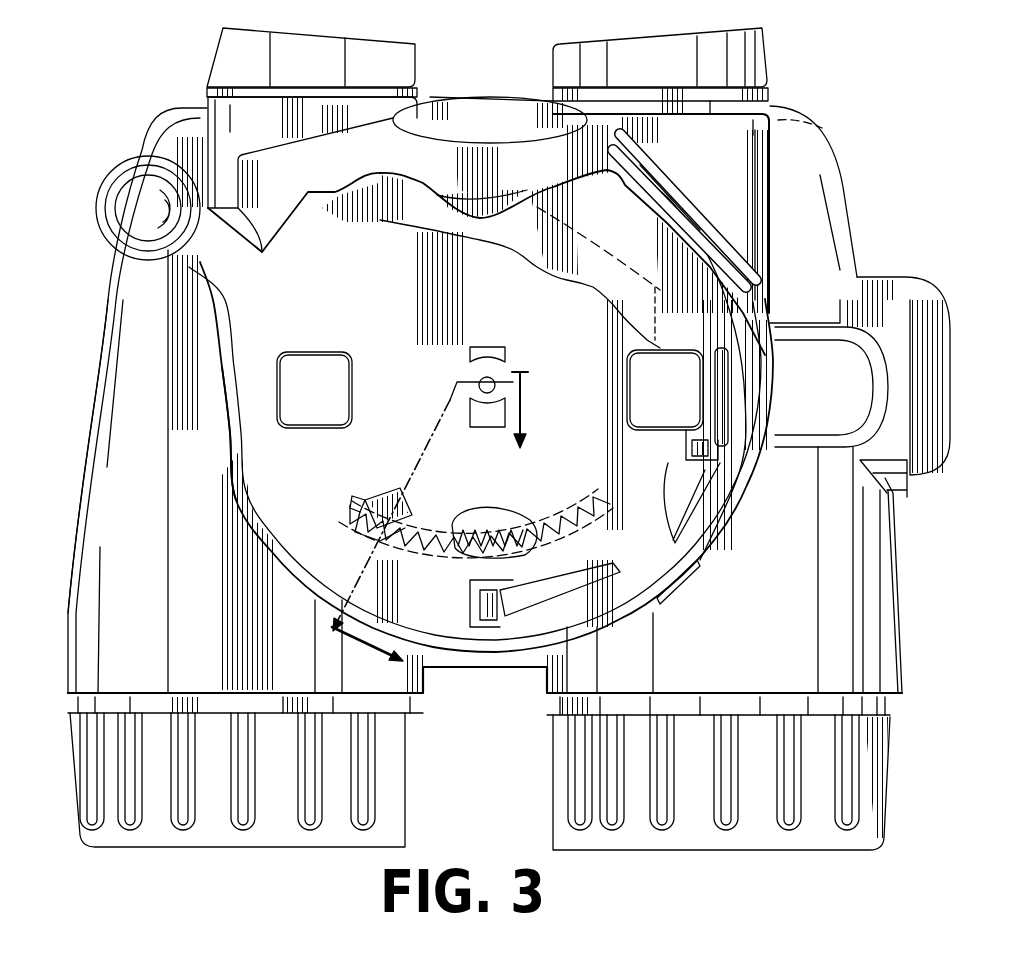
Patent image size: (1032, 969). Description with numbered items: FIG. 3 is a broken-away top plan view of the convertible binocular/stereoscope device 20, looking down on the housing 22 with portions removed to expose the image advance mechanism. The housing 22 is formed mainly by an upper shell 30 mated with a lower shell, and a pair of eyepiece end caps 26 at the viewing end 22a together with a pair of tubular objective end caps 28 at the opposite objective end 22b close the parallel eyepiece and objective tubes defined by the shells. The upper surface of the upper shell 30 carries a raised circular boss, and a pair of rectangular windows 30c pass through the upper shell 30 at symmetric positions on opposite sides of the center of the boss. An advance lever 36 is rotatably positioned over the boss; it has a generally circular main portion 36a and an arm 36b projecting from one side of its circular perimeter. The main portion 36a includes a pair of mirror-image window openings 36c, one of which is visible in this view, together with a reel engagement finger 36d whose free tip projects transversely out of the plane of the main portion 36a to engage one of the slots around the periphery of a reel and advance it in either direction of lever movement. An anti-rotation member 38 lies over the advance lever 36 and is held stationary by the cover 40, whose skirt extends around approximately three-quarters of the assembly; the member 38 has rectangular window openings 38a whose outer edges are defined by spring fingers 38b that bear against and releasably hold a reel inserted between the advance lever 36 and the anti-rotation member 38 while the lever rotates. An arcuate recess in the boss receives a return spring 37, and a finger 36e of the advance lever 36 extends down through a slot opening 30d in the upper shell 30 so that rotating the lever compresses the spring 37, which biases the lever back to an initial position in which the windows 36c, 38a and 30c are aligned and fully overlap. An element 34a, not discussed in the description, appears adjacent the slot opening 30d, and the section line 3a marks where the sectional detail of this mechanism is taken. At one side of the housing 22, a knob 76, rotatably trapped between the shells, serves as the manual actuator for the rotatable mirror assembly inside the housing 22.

The convertible binocular/stereoscope device 20 is at (970, 115).
The housing 22 is at (850, 185).
The viewing side or end 22a is at (508, 55).
The objective side or end 22b is at (506, 835).
The eyepiece end caps 26 is at (416, 68).
The tubular objective end caps 28 is at (408, 755).
The upper shell 30 is at (144, 545).
The rectangular windows 30c is at (342, 380).
The slot opening 30d is at (352, 500).
The lock member 34a is at (360, 528).
The advance lever 36 is at (349, 288).
The circular main portion 36a is at (262, 470).
The arm 36b is at (133, 190).
The window openings 36c is at (305, 351).
The reel engagement finger 36d is at (490, 612).
The finger 36e is at (388, 497).
The return spring 37 is at (495, 520).
The anti-rotation member 38 is at (619, 267).
The rectangular window opening 38a is at (636, 352).
The spring fingers 38b is at (712, 452).
The cover 40 is at (724, 167).
The knob 76 is at (948, 342).
The section line 3a is at (430, 504).